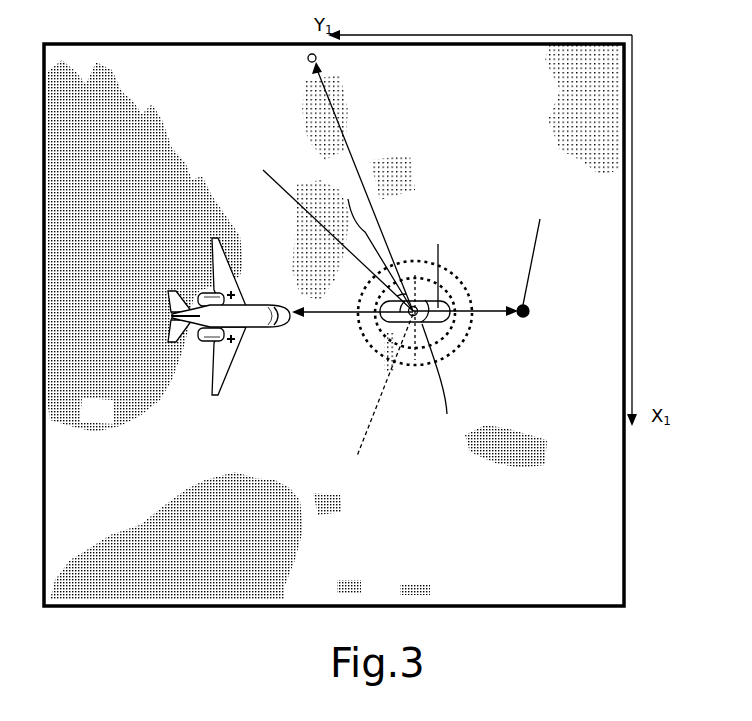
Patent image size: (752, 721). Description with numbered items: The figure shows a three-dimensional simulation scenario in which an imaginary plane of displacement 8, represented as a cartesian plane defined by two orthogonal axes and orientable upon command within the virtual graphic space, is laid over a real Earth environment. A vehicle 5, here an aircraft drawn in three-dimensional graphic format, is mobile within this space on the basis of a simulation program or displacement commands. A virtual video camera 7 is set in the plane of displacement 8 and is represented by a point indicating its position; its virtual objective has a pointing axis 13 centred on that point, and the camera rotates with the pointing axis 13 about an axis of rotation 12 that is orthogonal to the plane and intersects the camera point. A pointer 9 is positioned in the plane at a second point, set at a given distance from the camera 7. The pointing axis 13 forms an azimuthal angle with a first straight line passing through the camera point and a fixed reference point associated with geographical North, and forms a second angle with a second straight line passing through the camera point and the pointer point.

The vehicle 5 is at (257, 338).
The virtual video camera 7 is at (457, 324).
The imaginary plane of displacement 8 is at (562, 531).
The pointer 9 is at (521, 306).
The axis of rotation 12 is at (382, 397).
The pointing axis 13 is at (352, 306).